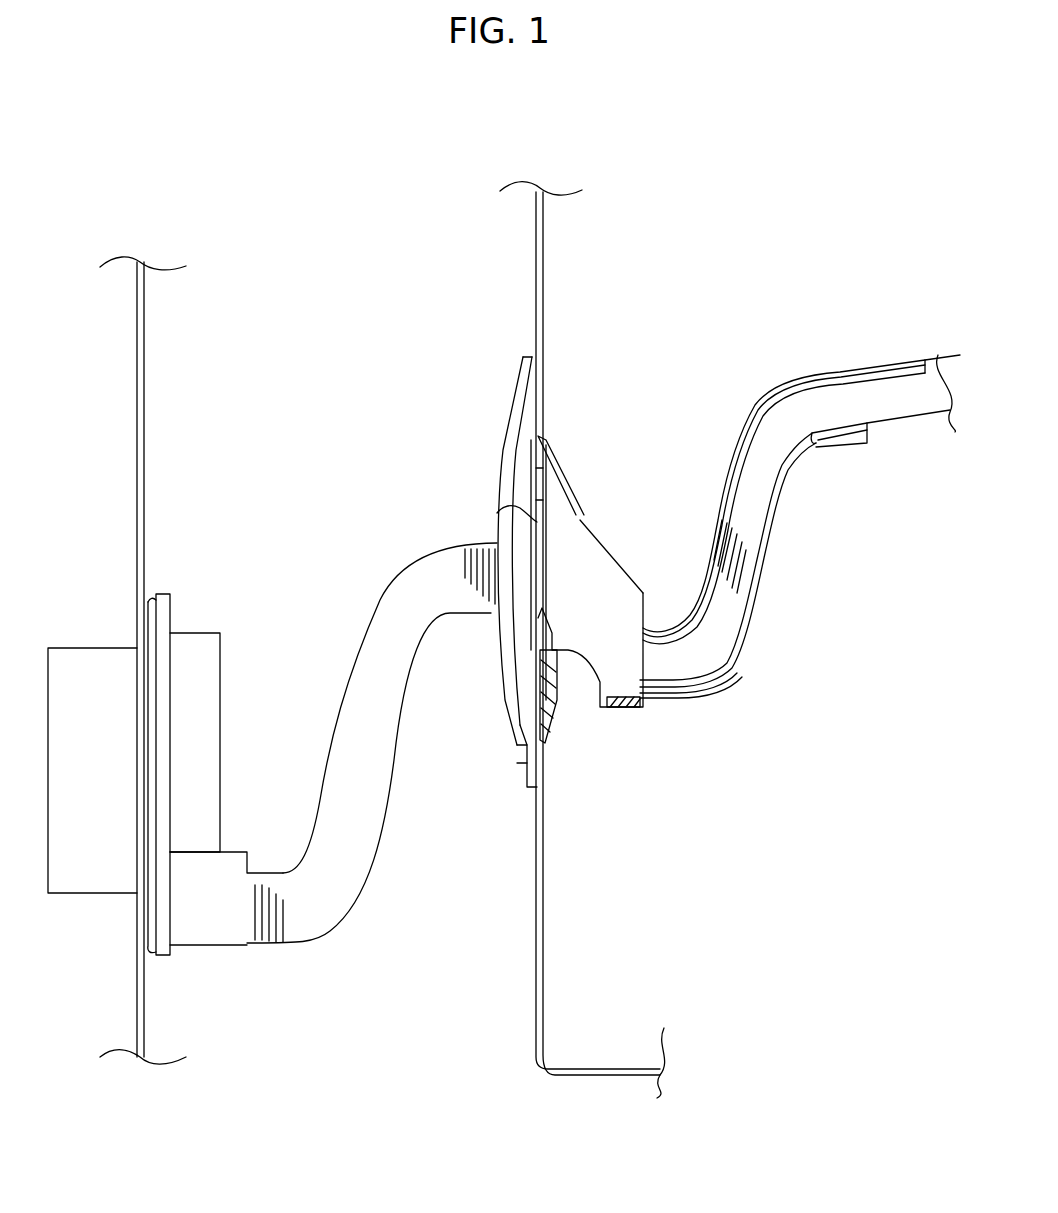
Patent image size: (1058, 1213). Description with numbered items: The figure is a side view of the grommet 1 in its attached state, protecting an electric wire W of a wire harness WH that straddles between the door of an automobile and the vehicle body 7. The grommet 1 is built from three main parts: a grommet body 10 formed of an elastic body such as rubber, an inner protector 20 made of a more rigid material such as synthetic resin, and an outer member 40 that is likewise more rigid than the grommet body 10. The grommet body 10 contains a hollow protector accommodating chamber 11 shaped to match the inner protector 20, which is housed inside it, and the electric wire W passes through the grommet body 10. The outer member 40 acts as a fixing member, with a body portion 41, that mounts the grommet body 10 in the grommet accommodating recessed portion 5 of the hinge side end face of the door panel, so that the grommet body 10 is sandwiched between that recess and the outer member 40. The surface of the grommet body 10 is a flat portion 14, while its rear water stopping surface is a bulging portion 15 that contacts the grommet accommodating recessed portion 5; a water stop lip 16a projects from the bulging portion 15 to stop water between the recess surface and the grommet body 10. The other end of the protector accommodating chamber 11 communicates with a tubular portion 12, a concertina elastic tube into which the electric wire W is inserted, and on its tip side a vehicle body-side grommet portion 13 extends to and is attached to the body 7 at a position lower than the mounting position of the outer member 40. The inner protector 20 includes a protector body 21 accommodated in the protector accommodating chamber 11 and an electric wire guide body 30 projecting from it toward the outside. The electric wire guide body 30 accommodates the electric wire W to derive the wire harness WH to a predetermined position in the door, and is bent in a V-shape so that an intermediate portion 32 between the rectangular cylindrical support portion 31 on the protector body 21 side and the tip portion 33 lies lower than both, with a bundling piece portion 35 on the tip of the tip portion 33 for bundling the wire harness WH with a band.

The grommet 1 is at (343, 383).
The body 7 is at (148, 343).
The vehicle body-side grommet portion 13 is at (172, 605).
The tubular portion 12 is at (348, 669).
The protector accommodating chamber 11 is at (549, 551).
The flat portion 14 is at (503, 513).
The outer member 40 is at (502, 452).
The body portion 41 is at (506, 698).
The grommet accommodating recessed portion 5 is at (513, 727).
The grommet body 10 is at (547, 443).
The bulging portion 15 is at (555, 472).
The protector body 21 is at (580, 497).
The support portion 31 is at (582, 518).
The water stop lip 16a is at (560, 690).
The intermediate portion 32 is at (660, 700).
The inner protector 20 is at (700, 427).
The electric wire guide body 30 is at (765, 583).
The tip portion 33 is at (820, 372).
The bundling piece portion 35 is at (907, 362).
The electric wire W is at (733, 543).
The wire harness WH is at (808, 445).